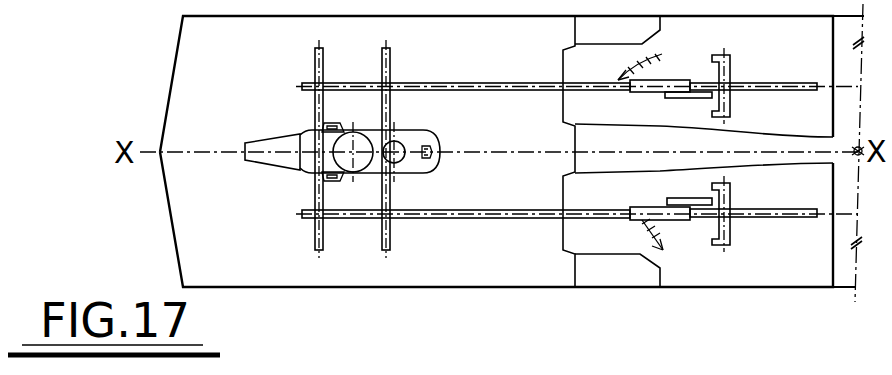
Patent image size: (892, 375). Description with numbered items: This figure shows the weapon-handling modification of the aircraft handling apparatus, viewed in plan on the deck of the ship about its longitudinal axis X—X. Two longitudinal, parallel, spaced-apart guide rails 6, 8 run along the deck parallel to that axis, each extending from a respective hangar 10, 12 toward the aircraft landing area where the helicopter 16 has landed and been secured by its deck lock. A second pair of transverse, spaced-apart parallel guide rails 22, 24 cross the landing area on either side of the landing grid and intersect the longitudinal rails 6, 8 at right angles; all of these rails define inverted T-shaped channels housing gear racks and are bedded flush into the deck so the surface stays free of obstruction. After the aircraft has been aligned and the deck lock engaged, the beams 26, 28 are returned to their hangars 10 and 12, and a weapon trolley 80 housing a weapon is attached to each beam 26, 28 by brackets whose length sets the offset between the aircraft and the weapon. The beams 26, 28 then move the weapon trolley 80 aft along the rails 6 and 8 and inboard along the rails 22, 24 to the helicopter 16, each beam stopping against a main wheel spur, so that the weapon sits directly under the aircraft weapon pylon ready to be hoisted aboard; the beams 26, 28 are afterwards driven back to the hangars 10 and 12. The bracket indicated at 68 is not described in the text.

The longitudinal guide rail 6 is at (455, 88).
The longitudinal guide rail 8 is at (527, 220).
The hangar 10 is at (768, 49).
The hangar 12 is at (790, 258).
The helicopter 16 is at (282, 158).
The transverse guide rail 22 is at (313, 244).
The transverse guide rail 24 is at (392, 245).
The beam 26 is at (655, 58).
The beam 28 is at (684, 219).
The bracket 68 is at (732, 70).
The weapon trolley 80 is at (688, 97).